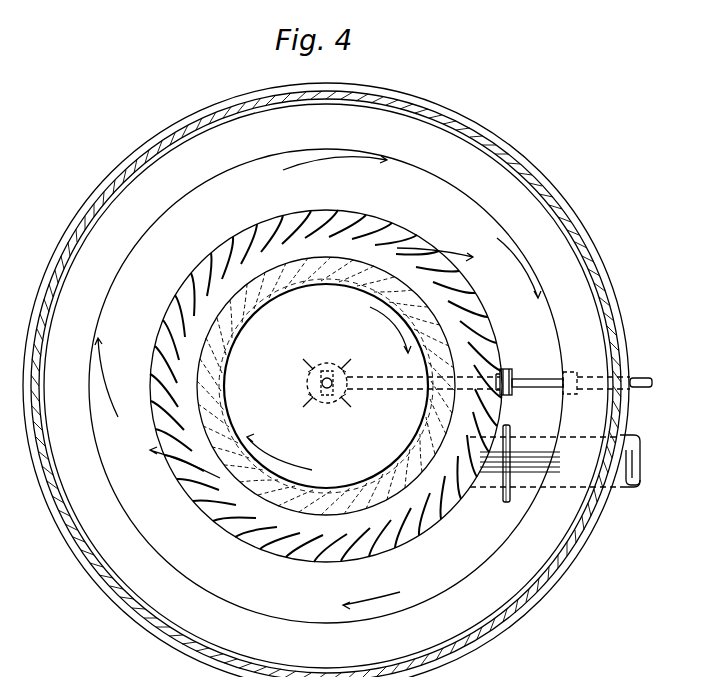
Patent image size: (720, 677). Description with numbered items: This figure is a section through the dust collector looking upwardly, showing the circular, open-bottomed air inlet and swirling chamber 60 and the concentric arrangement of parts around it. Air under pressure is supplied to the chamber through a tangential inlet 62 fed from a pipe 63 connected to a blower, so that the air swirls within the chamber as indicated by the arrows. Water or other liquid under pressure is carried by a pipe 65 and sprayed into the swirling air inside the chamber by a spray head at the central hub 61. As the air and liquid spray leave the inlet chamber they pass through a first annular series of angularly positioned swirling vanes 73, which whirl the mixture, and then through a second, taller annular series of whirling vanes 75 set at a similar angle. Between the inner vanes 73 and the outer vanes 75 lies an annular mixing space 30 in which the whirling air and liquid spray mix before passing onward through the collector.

The mixing space 30 is at (378, 252).
The air inlet and swirling chamber 60 is at (476, 628).
The hub shaft 61 is at (323, 364).
The tangential inlet 62 is at (359, 486).
The pipe 63 is at (530, 488).
The pipe 65 is at (530, 376).
The swirling vanes 73 is at (275, 295).
The whirling vanes 75 is at (272, 232).